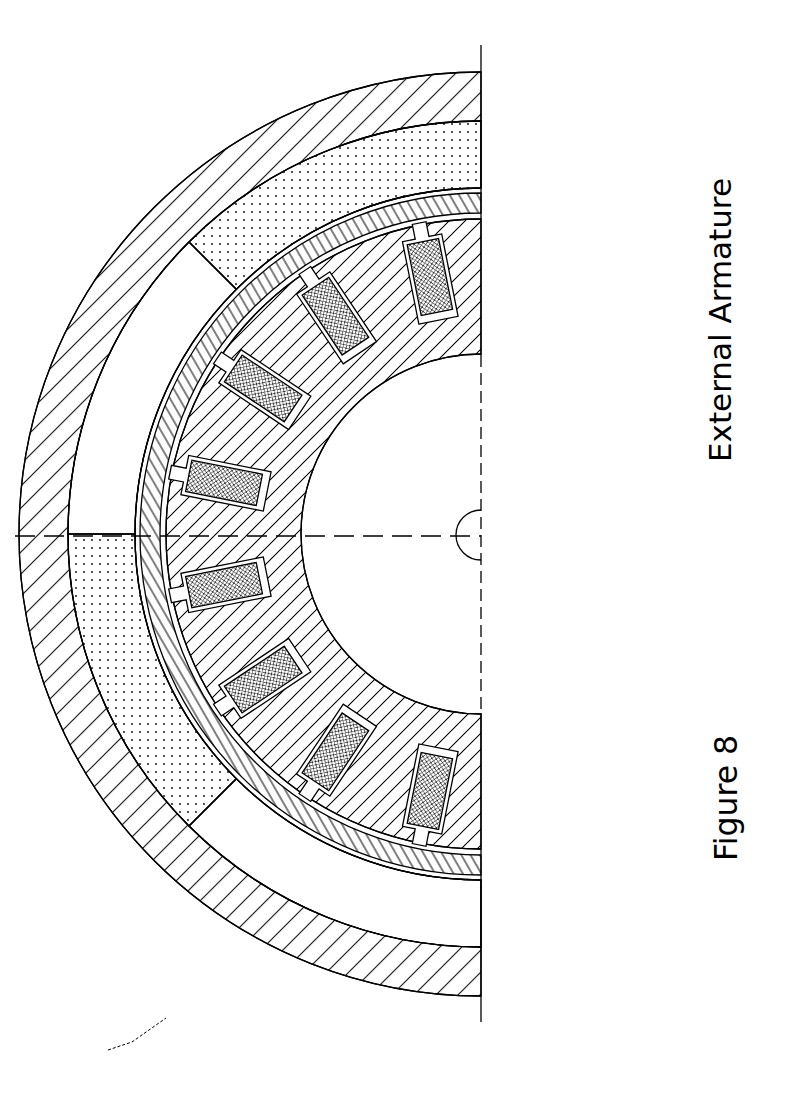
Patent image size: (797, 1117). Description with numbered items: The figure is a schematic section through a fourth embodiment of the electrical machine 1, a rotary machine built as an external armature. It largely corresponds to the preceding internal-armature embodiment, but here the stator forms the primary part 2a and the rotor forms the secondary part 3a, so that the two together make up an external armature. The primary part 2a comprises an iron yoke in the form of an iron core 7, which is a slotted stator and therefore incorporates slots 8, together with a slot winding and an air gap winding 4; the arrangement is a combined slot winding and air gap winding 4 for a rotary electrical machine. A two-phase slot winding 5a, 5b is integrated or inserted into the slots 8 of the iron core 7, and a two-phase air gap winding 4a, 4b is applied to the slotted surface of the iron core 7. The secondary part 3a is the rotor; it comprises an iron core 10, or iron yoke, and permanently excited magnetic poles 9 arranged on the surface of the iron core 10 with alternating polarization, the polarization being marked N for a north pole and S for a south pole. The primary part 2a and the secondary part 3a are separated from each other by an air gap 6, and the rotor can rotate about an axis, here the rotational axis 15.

The electrical machine 1 is at (123, 1042).
The primary part 2a is at (525, 794).
The secondary part 3a is at (525, 940).
The air gap winding 4 is at (518, 203).
The air gap winding phase 4a is at (405, 130).
The air gap winding phase 4b is at (293, 247).
The slot winding phase 5a is at (443, 332).
The slot winding phase 5b is at (367, 357).
The air gap 6 is at (525, 878).
The iron core 7 is at (483, 290).
The slots 8 is at (427, 700).
The permanently excited magnetic poles 9 is at (518, 156).
The iron core 10 is at (518, 96).
The rotational axis 15 is at (502, 552).